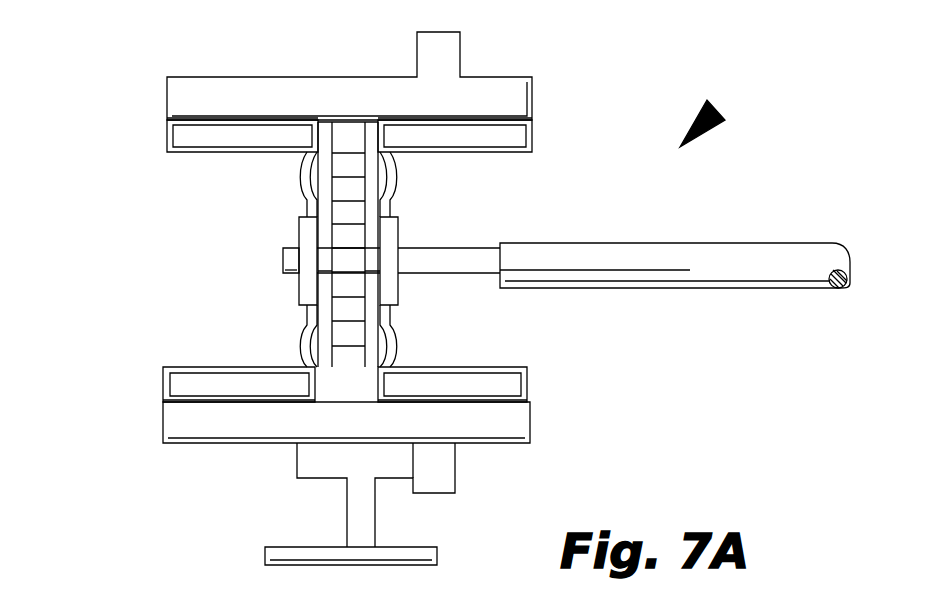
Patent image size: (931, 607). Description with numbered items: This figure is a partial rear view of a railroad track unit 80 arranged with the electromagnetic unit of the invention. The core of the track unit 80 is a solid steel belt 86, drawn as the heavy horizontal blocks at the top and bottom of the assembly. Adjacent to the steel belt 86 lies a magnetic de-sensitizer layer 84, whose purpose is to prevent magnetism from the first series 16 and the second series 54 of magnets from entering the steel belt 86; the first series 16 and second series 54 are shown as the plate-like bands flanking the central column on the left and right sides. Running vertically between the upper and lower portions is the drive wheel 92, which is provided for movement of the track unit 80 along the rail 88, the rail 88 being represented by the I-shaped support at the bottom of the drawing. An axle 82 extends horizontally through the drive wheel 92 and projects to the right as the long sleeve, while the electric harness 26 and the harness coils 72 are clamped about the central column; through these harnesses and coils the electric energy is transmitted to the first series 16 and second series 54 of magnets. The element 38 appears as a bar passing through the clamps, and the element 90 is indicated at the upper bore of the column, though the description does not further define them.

The first series of magnets 16 is at (188, 140).
The electric harness 26 is at (303, 247).
The drive shaft 38 is at (387, 230).
The second series of magnets 54 is at (513, 143).
The harness coils 72 is at (313, 198).
The railroad track unit 80 is at (717, 110).
The axle 82 is at (775, 262).
The magnetic de-sensitizer layer 84 is at (182, 118).
The solid steel belt 86 is at (352, 92).
The rail 88 is at (357, 518).
The upper bore 90 is at (347, 130).
The drive wheel 92 is at (347, 333).